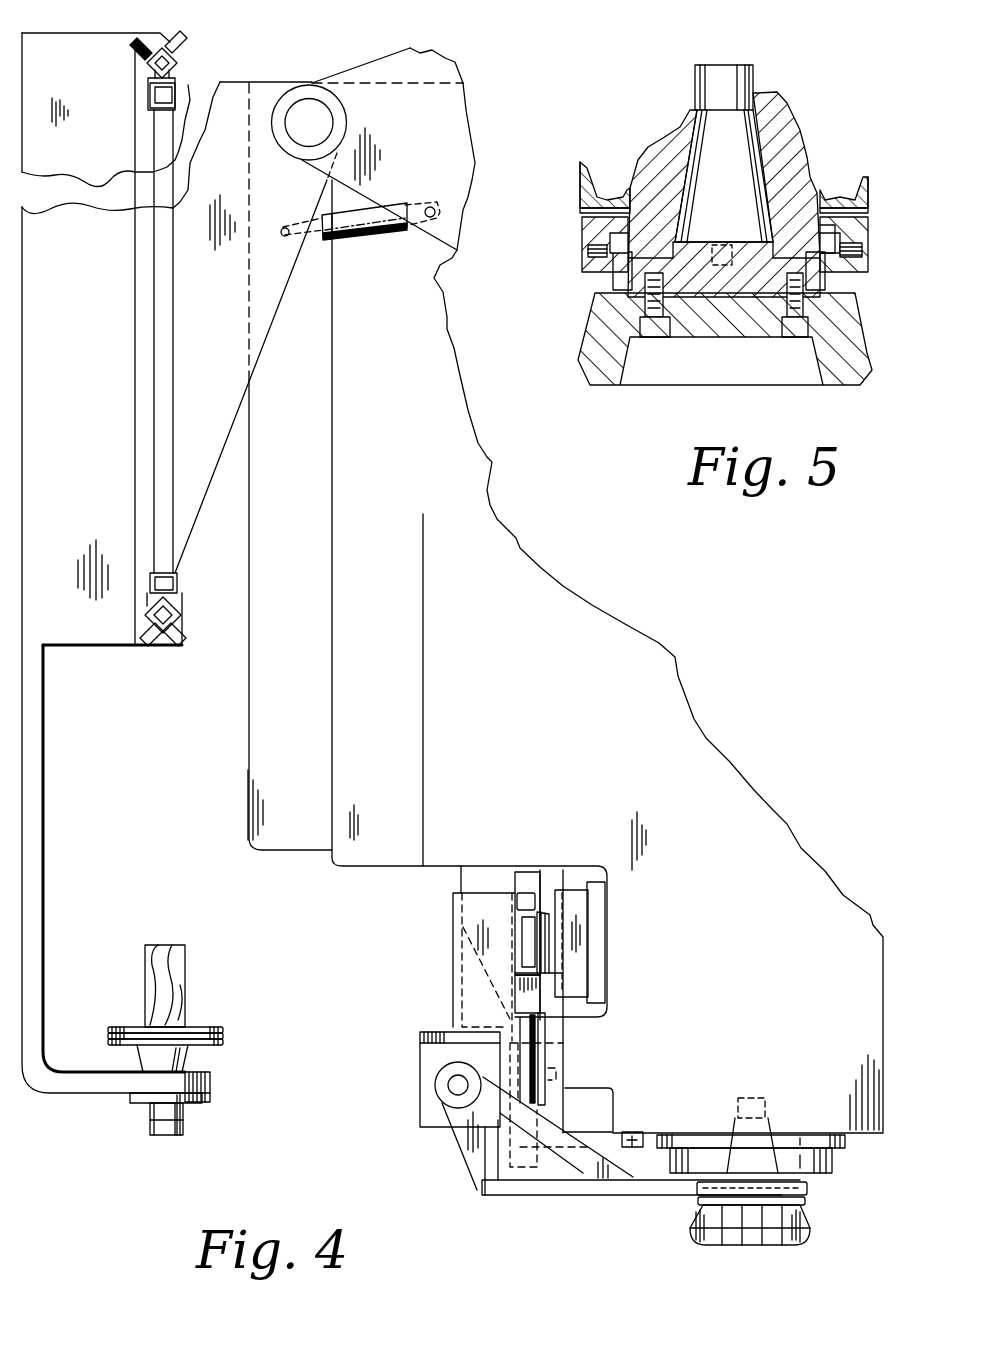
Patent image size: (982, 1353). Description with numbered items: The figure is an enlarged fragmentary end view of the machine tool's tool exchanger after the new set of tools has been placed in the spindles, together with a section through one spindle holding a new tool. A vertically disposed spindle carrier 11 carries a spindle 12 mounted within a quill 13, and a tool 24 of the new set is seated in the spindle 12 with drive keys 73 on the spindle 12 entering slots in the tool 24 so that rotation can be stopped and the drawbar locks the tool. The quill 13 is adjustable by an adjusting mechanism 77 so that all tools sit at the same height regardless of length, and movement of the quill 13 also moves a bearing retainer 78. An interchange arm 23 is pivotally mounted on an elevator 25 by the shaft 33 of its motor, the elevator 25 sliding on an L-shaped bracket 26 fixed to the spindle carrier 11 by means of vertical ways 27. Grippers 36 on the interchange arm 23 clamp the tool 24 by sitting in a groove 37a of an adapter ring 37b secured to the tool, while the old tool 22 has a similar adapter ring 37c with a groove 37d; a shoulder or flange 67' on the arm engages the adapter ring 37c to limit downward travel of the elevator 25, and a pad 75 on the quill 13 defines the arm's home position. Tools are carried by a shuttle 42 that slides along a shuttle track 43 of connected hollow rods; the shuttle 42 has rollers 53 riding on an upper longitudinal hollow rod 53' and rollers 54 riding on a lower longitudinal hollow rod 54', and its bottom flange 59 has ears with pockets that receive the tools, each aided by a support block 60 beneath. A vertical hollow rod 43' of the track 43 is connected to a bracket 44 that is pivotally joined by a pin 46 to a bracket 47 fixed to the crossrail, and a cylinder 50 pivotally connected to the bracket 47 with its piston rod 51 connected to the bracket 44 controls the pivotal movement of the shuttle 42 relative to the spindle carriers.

In FIG. 4, the spindle carrier 11 is at (772, 979).
In FIG. 5, the spindle 12 is at (783, 128).
In FIG. 4, the quill 13 is at (835, 1166).
In FIG. 5, the quill 13 is at (580, 183).
In FIG. 4, the tool 22 is at (186, 962).
In FIG. 4, the interchange arm 23 is at (476, 1205).
In FIG. 5, the interchange arm 23 is at (570, 240).
In FIG. 4, the tool 24 is at (746, 1245).
In FIG. 5, the tool 24 is at (604, 385).
In FIG. 4, the elevator 25 is at (450, 968).
In FIG. 4, the L-shaped bracket 26 is at (555, 1058).
In FIG. 4, the vertical ways 27 is at (528, 1032).
In FIG. 4, the shaft 33 is at (448, 1085).
In FIG. 5, the grippers 36 is at (590, 258).
In FIG. 4, the groove 37a is at (808, 1203).
In FIG. 5, the groove 37a is at (856, 274).
In FIG. 4, the adapter ring 37b is at (808, 1187).
In FIG. 5, the adapter ring 37b is at (620, 285).
In FIG. 4, the adapter ring 37c is at (125, 1027).
In FIG. 4, the groove 37d is at (225, 1038).
In FIG. 4, the shuttle 42 is at (55, 857).
In FIG. 4, the shuttle track 43 is at (123, 346).
In FIG. 4, the vertical hollow rod 43' is at (132, 341).
In FIG. 4, the bracket 44 is at (198, 520).
In FIG. 4, the pin 46 is at (318, 120).
In FIG. 4, the bracket 47 is at (451, 250).
In FIG. 4, the cylinder 50 is at (362, 240).
In FIG. 4, the piston rod 51 is at (312, 240).
In FIG. 4, the rollers 53 is at (157, 43).
In FIG. 4, the longitudinal hollow rod 53' is at (131, 86).
In FIG. 4, the rollers 54 is at (173, 633).
In FIG. 4, the longitudinal hollow rod 54' is at (140, 597).
In FIG. 4, the bottom flange 59 is at (98, 1094).
In FIG. 4, the support block 60 is at (190, 1110).
In FIG. 5, the shoulder or flange 67' is at (837, 204).
In FIG. 5, the drive keys 73 is at (720, 243).
In FIG. 4, the pad 75 is at (672, 1160).
In FIG. 4, the adjusting mechanism 77 is at (578, 962).
In FIG. 4, the bearing retainer 78 is at (847, 1140).